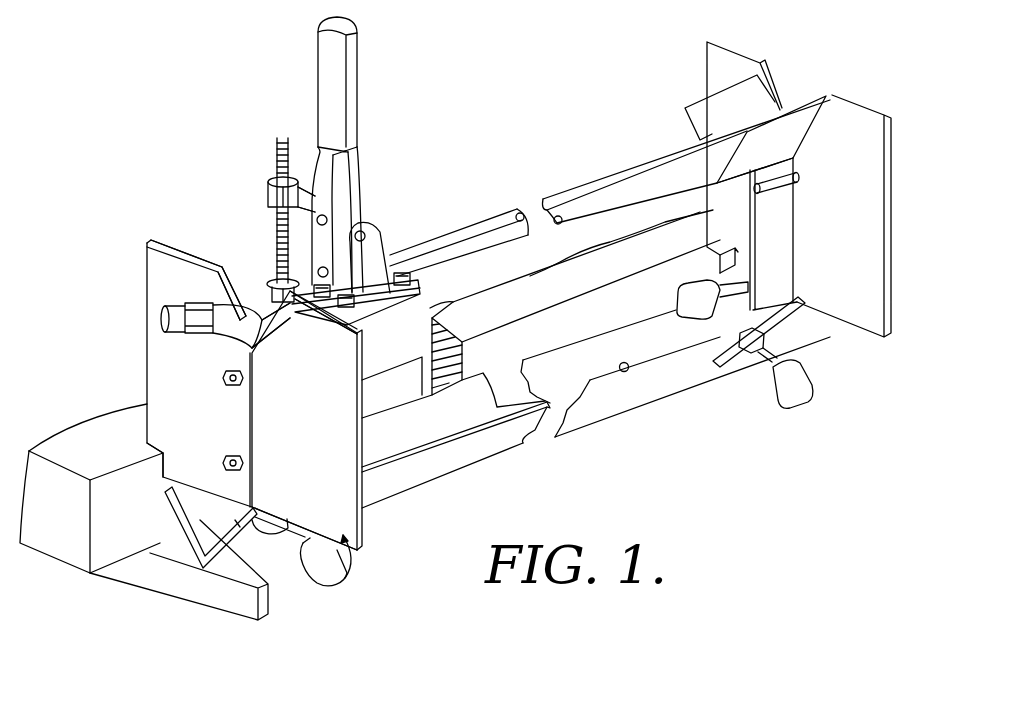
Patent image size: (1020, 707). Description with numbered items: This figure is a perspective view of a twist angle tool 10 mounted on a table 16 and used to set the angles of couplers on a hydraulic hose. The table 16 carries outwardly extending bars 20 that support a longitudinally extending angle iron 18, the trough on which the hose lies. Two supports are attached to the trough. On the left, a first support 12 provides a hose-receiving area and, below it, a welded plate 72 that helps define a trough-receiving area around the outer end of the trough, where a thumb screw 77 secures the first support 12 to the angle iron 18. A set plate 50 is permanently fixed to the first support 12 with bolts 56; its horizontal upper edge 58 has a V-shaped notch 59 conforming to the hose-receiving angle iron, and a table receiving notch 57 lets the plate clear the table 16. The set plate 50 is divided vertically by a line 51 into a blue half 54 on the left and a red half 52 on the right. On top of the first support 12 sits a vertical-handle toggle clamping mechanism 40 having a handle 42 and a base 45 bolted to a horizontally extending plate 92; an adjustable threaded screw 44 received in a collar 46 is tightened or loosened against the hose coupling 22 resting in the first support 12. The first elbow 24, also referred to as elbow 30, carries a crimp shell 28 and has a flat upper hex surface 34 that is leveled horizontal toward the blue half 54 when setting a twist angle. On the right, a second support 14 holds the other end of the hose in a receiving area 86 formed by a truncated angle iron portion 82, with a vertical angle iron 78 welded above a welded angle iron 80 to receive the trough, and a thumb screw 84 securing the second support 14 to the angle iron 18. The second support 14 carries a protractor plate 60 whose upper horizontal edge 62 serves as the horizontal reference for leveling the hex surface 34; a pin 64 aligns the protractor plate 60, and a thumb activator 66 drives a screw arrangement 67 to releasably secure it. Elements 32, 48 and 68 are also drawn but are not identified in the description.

The twist angle tool 10 is at (140, 78).
The first support 12 is at (263, 240).
The second support 14 is at (693, 99).
The table 16 is at (72, 558).
The angle iron 18 is at (425, 478).
The outwardly extending bars 20 is at (185, 592).
The hose coupling 22 is at (467, 238).
The first elbow 24 is at (210, 344).
The shell 28 is at (272, 335).
The first elbow 30 is at (216, 378).
The pipe fitting 32 is at (175, 320).
The upper hex surface 34 is at (202, 307).
The clamping mechanism 40 is at (365, 177).
The handle 42 is at (358, 48).
The adjustable threaded screw 44 is at (282, 137).
The base 45 is at (405, 295).
The collar 46 is at (262, 190).
The lock nut 48 is at (286, 304).
The set plate 50 is at (337, 570).
The line 51 is at (252, 487).
The half 52 is at (307, 420).
The half 54 is at (199, 373).
The bolts 56 is at (233, 390).
The table receiving notch 57 is at (160, 468).
The horizontal upper edge 58 is at (168, 245).
The V-shaped notch 59 is at (230, 288).
The protractor plate 60 is at (771, 232).
The upper horizontal edge 62 is at (740, 53).
The pin 64 is at (783, 190).
The thumb activator 66 is at (677, 300).
The screw arrangement 67 is at (735, 258).
The mounting hole 68 is at (622, 373).
The welded plate 72 is at (265, 533).
The thumb screw 77 is at (345, 572).
The vertical angle iron 78 is at (757, 234).
The welded angle iron 80 is at (777, 328).
The truncated angle iron portion 82 is at (802, 132).
The thumb screw 84 is at (807, 400).
The receiving area 86 is at (697, 120).
The horizontally extending plate 92 is at (437, 305).